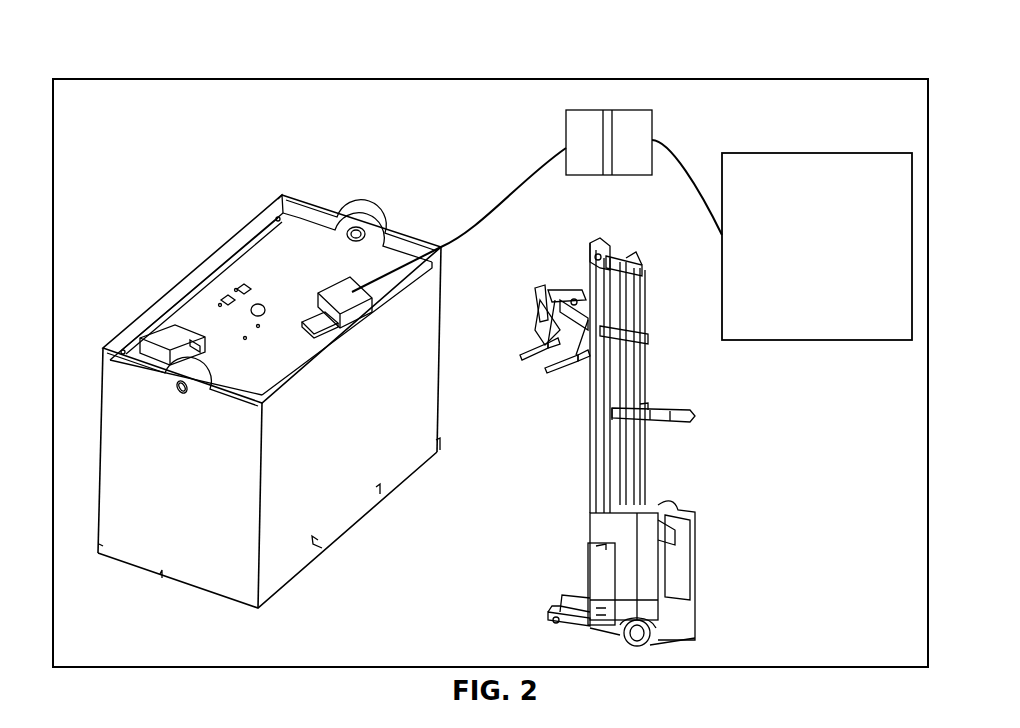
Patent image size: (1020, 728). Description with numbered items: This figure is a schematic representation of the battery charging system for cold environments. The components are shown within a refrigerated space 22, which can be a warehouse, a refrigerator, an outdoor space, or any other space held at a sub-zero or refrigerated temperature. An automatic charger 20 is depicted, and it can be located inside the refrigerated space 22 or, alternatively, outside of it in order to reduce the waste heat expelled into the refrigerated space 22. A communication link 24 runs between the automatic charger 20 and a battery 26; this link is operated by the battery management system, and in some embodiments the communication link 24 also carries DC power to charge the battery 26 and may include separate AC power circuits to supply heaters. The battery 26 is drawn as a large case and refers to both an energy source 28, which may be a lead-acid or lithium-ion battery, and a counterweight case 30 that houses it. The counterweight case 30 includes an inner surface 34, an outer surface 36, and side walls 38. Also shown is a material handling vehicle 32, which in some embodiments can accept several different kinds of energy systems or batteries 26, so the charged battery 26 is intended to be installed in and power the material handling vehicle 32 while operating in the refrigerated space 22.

The automatic charger 20 is at (830, 170).
The refrigerated space 22 is at (88, 74).
The communication link 24 is at (630, 110).
The battery 26 is at (377, 485).
The energy source 28 is at (262, 262).
The counterweight case 30 is at (113, 492).
The material handling vehicle 32 is at (648, 475).
The inner surface 34 is at (178, 302).
The outer surface 36 is at (118, 392).
The side walls 38 is at (276, 210).